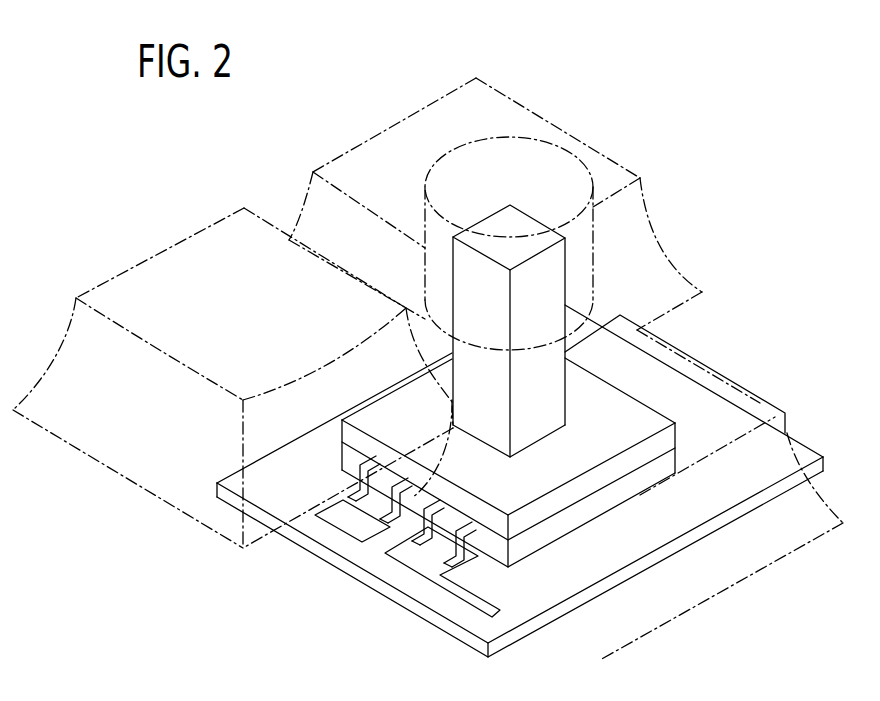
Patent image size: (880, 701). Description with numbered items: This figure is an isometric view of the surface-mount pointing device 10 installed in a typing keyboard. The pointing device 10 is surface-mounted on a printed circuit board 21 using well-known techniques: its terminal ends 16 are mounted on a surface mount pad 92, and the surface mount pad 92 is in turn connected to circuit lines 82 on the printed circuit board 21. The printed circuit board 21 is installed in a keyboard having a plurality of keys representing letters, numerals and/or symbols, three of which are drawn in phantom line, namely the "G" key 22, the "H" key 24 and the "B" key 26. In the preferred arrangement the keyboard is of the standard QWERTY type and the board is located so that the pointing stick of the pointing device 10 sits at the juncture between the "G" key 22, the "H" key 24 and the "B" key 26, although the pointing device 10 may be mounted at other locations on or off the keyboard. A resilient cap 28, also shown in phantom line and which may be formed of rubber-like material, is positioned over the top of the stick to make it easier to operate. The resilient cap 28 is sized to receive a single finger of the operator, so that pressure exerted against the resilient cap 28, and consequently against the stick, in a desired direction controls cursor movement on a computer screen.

The pointing device 10 is at (680, 387).
The terminal ends 16 is at (353, 480).
The printed circuit board 21 is at (417, 590).
The "G" key 22 is at (175, 280).
The "H" key 24 is at (388, 180).
The "B" key 26 is at (742, 422).
The resilient cap 28 is at (513, 167).
The circuit lines 82 is at (472, 603).
The surface mount pad 92 is at (343, 507).